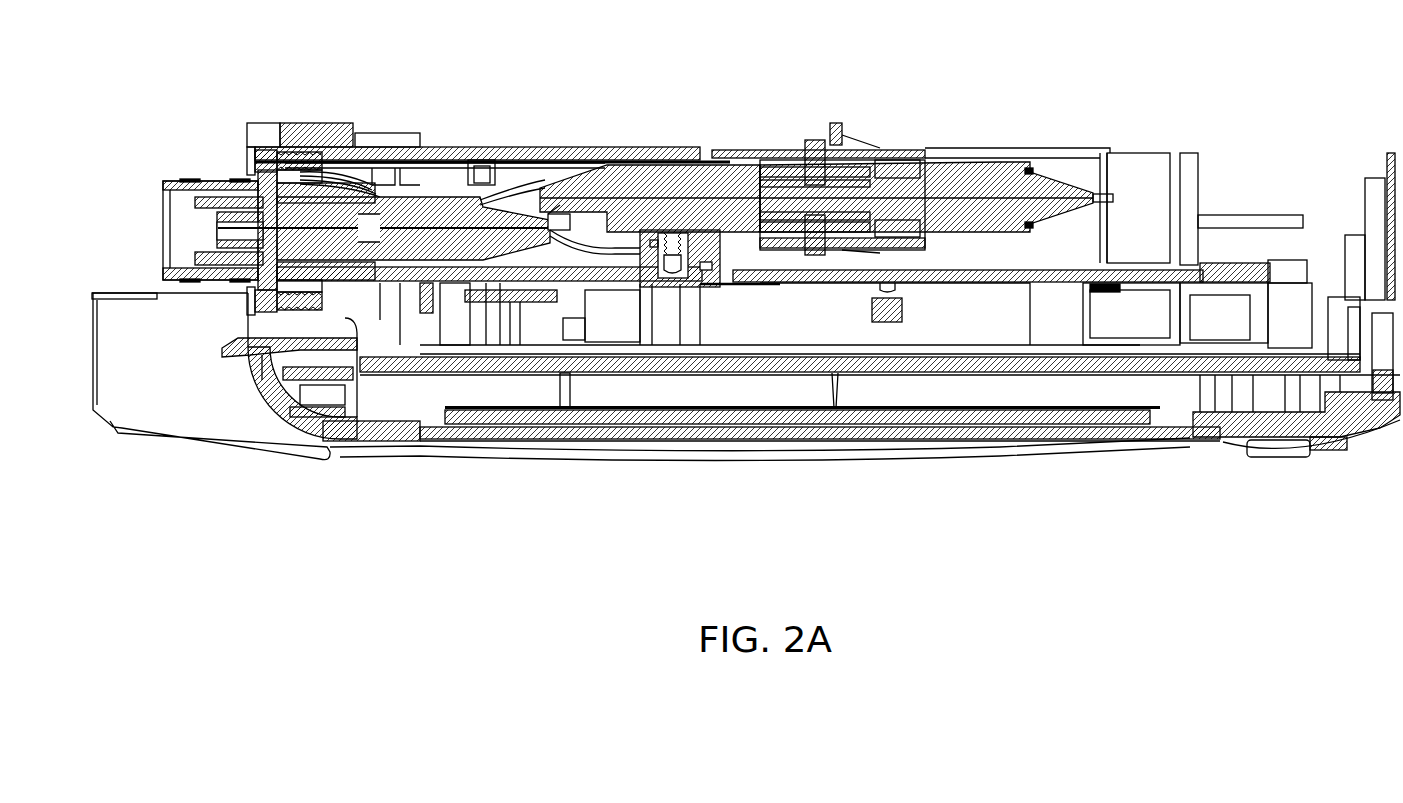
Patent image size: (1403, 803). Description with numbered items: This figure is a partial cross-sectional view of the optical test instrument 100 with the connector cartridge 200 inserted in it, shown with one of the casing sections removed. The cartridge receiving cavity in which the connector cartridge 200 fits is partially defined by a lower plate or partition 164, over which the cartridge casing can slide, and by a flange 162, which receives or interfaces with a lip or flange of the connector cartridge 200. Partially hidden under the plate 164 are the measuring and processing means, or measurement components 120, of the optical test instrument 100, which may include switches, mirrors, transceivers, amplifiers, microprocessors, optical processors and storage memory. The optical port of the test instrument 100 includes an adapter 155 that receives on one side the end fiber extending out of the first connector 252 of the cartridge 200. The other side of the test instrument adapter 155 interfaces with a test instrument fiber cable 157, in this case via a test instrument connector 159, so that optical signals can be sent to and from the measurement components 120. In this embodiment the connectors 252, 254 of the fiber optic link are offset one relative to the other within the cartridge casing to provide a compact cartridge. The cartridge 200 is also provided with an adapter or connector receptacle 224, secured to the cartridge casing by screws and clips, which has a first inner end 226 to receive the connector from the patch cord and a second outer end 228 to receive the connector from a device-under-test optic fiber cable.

The optical test instrument 100 is at (1077, 466).
The measurement components 120 is at (1206, 310).
The adapter 155 is at (912, 158).
The test instrument fiber cable 157 is at (1110, 197).
The test instrument connector 159 is at (988, 183).
The flange 162 is at (370, 141).
The lower plate 164 is at (503, 283).
The connector cartridge 200 is at (674, 116).
The adapter 224 is at (175, 181).
The first end 226 is at (372, 185).
The second end 228 is at (180, 232).
The first connector 252 is at (651, 205).
The connector 254 is at (406, 248).